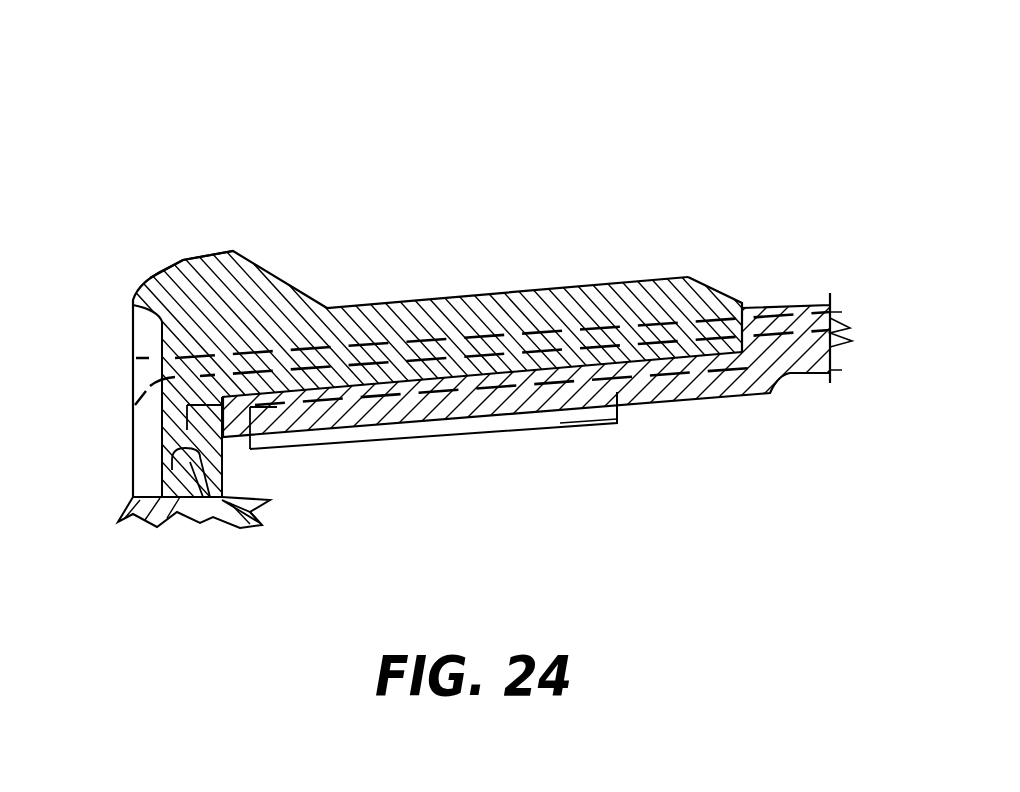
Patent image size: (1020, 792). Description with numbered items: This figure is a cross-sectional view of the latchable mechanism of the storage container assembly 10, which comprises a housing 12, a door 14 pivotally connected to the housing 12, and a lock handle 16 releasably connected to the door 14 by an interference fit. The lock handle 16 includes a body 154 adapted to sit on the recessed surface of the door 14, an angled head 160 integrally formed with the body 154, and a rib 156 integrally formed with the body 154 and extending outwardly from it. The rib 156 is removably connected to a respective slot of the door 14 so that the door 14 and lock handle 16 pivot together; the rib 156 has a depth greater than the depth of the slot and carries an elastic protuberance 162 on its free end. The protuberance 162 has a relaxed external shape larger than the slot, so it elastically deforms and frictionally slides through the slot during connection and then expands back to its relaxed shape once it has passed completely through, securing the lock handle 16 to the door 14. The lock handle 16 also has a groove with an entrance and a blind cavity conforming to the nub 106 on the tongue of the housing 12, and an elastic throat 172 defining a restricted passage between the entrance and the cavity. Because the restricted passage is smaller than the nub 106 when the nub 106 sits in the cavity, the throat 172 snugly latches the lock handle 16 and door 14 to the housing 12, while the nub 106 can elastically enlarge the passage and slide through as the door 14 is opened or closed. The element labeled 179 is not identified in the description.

The storage container assembly 10 is at (612, 108).
The housing 12 is at (226, 532).
The door 14 is at (710, 412).
The lock handle 16 is at (442, 288).
The nub 106 is at (153, 486).
The body 154 is at (622, 280).
The rib 156 is at (403, 415).
The angled head 160 is at (200, 278).
The elastic protuberance 162 is at (552, 422).
The elastic throat 172 is at (250, 503).
The clip finger 179 is at (200, 477).